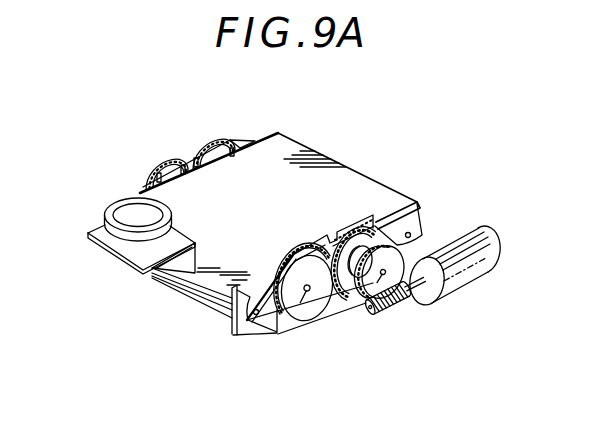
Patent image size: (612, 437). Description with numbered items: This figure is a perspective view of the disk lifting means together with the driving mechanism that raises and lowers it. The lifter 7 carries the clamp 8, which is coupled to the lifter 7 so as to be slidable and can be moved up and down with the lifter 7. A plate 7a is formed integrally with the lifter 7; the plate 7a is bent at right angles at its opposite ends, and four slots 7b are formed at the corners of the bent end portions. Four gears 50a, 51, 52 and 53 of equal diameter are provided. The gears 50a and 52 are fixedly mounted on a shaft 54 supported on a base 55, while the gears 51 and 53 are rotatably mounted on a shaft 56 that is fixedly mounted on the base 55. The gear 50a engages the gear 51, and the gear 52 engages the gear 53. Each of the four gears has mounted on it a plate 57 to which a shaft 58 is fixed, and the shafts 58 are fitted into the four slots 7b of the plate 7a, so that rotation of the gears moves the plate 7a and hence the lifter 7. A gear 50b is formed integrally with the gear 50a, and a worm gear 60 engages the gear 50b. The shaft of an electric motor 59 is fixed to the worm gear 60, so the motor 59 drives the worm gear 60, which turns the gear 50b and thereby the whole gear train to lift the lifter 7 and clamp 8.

The lifter 7 is at (88, 234).
The plate 7a is at (321, 152).
The slots 7b is at (233, 334).
The clamp 8 is at (103, 212).
The gear 50a is at (376, 226).
The gear 50b is at (421, 234).
The gear 51 is at (307, 334).
The gear 52 is at (199, 145).
The gear 53 is at (153, 174).
The shaft 54 is at (366, 303).
The base 55 is at (190, 291).
The shaft 56 is at (312, 290).
The plate 57 is at (176, 164).
The shaft 58 is at (258, 326).
The electric motor 59 is at (478, 289).
The worm gear 60 is at (400, 309).